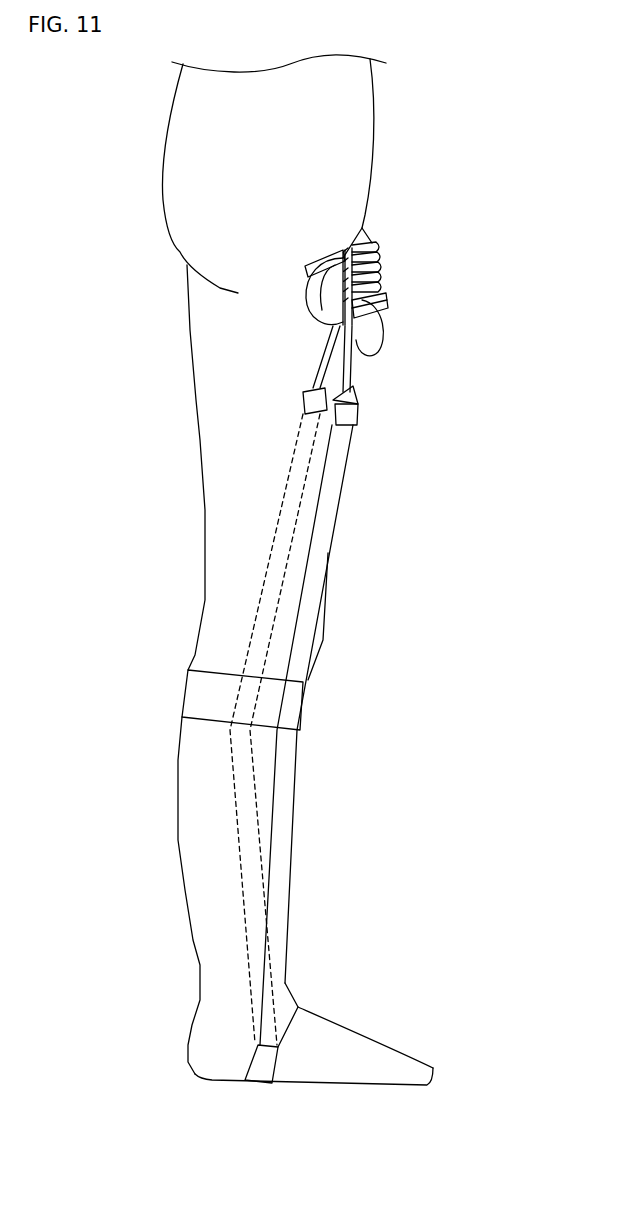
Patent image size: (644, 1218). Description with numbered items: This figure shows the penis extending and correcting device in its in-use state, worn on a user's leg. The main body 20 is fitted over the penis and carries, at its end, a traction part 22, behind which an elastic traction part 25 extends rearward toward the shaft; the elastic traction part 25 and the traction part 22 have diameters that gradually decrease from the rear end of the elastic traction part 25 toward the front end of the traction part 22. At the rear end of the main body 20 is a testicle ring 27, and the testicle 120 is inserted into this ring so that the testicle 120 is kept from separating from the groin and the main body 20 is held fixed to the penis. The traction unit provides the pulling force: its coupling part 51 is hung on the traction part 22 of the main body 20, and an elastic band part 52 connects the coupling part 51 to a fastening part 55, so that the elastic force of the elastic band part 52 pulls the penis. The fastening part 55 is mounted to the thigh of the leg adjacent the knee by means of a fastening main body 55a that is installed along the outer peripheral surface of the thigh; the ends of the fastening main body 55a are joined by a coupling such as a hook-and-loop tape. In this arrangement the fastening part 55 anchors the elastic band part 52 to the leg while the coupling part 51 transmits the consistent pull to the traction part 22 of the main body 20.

The main body 20 is at (312, 303).
The traction part 22 is at (393, 309).
The elastic traction part 25 is at (392, 280).
The testicle ring 27 is at (308, 281).
The coupling part 51 is at (348, 375).
The elastic band part 52 is at (308, 582).
The fastening part 55 is at (237, 729).
The fastening main body 55a is at (205, 683).
The testicle 120 is at (320, 300).